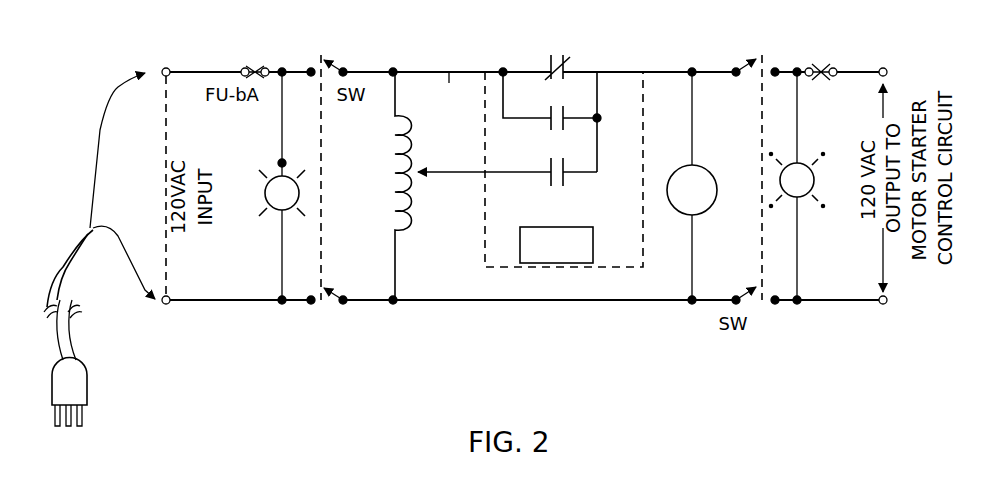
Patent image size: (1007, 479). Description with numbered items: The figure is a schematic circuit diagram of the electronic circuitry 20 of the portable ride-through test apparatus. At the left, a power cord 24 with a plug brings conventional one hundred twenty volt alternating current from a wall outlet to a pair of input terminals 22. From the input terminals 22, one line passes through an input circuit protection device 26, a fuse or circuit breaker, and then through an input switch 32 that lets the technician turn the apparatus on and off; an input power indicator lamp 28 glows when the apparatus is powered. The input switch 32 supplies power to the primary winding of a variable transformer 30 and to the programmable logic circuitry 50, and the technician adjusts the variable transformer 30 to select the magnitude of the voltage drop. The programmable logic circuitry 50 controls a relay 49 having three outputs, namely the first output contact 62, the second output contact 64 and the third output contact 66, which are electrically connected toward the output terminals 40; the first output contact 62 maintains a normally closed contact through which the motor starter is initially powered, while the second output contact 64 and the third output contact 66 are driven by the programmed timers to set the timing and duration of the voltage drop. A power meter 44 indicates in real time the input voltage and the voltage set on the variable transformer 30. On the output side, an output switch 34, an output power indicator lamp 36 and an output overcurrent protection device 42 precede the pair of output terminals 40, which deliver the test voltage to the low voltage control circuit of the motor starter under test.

The electronic circuitry 20 is at (631, 374).
The input terminals 22 is at (165, 67).
The power cord 24 is at (78, 342).
The input circuit protection device 26 is at (244, 66).
The input power indicator lamp 28 is at (281, 213).
The variable transformer 30 is at (404, 84).
The input switch 32 is at (333, 62).
The output switch 34 is at (776, 55).
The output power indicator lamp 36 is at (801, 198).
The output terminals 40 is at (883, 67).
The output overcurrent protection device 42 is at (830, 67).
The power meter 44 is at (684, 215).
The relay 49 is at (496, 78).
The programmable logic circuitry 50 is at (594, 243).
The OUTPUT-1 62 is at (585, 72).
The OUTPUT-2 64 is at (597, 118).
The OUTPUT-3 66 is at (585, 172).